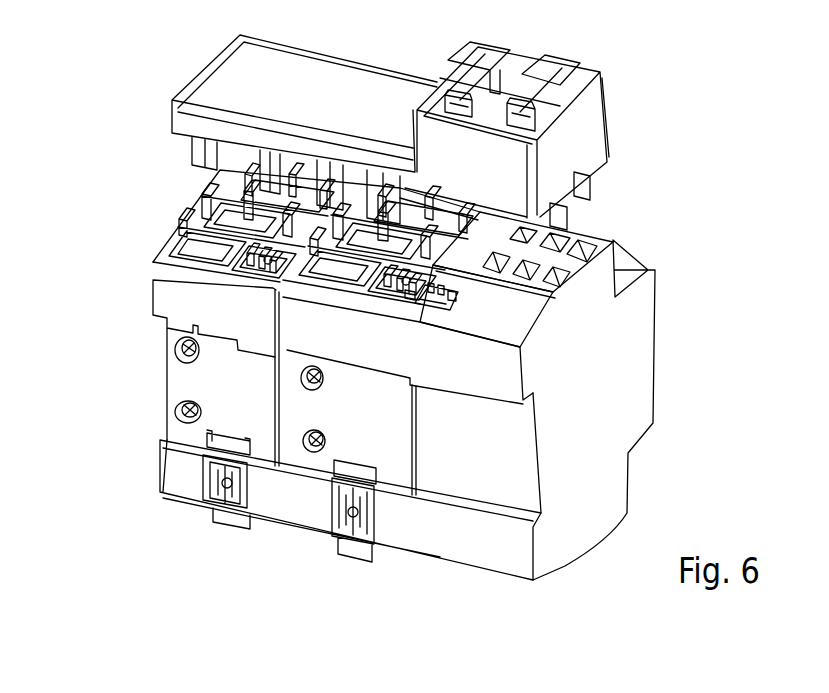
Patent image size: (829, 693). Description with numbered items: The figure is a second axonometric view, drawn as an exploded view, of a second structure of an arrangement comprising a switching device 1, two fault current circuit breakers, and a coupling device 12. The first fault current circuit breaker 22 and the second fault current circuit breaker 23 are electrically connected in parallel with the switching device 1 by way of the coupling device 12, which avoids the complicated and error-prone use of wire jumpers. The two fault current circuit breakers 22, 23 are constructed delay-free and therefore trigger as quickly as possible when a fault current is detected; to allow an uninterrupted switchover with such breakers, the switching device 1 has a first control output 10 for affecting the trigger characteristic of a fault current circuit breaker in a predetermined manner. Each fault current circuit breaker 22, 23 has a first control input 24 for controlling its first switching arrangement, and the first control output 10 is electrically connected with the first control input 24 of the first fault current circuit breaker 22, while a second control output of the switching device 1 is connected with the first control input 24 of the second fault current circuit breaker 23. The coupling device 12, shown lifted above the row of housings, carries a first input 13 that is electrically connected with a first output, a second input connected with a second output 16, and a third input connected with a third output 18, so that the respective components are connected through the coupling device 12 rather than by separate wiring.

The switching device 1 is at (638, 397).
The first control output 10 is at (432, 305).
The coupling device 12 is at (592, 128).
The first input 13 is at (520, 108).
The second output 16 is at (387, 197).
The third output 18 is at (263, 160).
The first fault current circuit breaker 22 is at (385, 535).
The second fault current circuit breaker 23 is at (172, 298).
The first control input 24 is at (257, 255).